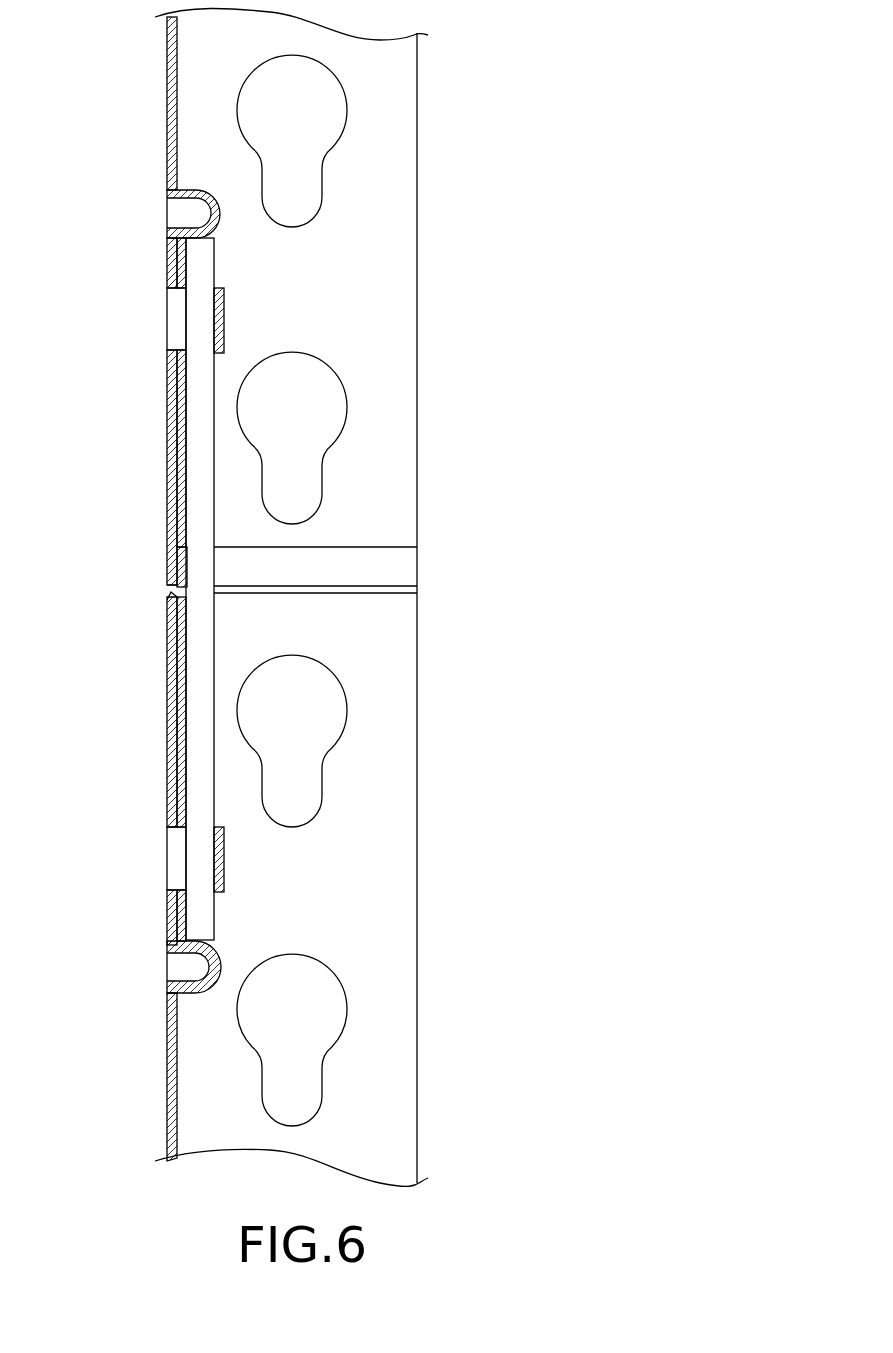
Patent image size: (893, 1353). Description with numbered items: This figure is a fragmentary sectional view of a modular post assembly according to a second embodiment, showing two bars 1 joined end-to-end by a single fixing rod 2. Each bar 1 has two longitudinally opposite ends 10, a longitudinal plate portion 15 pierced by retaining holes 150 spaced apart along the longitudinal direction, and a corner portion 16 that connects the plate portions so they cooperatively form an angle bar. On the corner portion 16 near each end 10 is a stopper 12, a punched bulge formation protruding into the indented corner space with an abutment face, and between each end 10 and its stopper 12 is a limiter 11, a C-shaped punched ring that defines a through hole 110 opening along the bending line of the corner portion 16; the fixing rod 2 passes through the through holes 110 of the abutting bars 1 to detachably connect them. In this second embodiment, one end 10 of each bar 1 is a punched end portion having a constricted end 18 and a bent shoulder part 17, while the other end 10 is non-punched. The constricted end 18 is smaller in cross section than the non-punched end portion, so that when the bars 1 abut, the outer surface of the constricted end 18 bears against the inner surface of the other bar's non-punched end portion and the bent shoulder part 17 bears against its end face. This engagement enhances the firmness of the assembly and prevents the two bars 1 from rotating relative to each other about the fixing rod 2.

The bar 1 is at (473, 300).
The fixing rod 2 is at (200, 437).
The end 10 is at (150, 502).
The limiter 11 is at (223, 320).
The stopper 12 is at (218, 222).
The longitudinal plate portion 15 is at (378, 93).
The corner portion 16 is at (169, 254).
The bent shoulder part 17 is at (172, 598).
The constricted end 18 is at (178, 560).
The through hole 110 is at (175, 317).
The retaining hole 150 is at (299, 427).